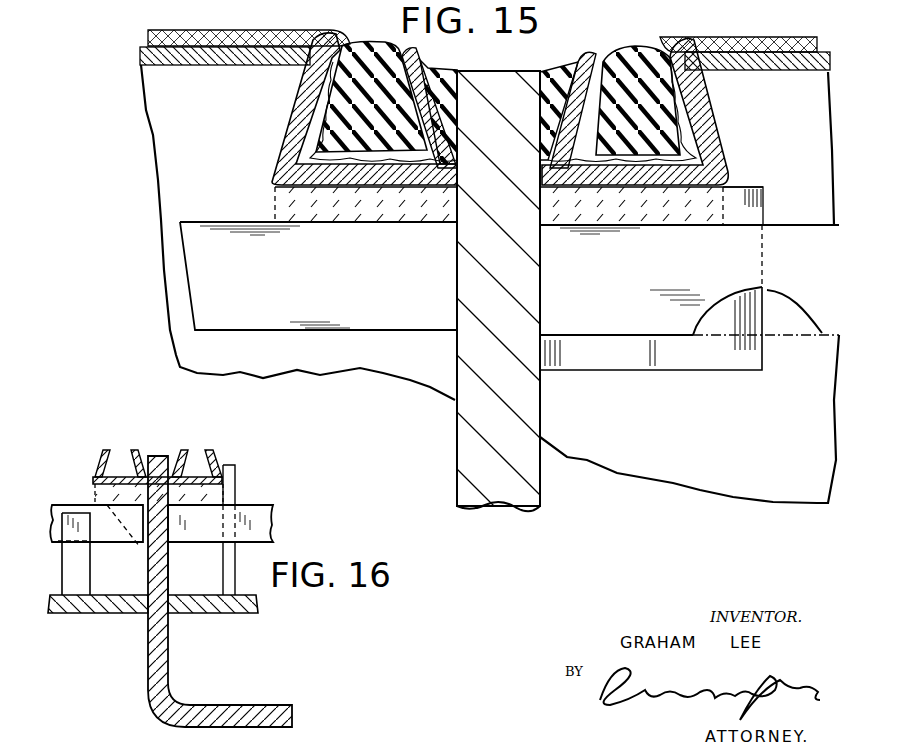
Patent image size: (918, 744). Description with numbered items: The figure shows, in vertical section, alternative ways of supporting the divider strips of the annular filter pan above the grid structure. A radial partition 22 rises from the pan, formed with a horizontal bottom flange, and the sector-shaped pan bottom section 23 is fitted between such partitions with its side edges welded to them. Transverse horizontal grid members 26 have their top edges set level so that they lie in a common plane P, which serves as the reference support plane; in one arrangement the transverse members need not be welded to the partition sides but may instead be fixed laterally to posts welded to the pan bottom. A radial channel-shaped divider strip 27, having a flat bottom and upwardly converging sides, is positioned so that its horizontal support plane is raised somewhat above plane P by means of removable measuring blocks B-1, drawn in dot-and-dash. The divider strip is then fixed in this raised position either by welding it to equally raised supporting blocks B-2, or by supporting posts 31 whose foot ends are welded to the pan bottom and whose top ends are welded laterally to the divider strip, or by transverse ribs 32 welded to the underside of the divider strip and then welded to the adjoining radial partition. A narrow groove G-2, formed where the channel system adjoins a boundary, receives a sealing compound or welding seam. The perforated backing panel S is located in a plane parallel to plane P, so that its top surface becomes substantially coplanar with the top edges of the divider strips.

In FIG. 15, the perforated backing panel S is at (240, 66).
In FIG. 15, the common plane P is at (255, 221).
In FIG. 16, the common plane P is at (90, 505).
In FIG. 15, the removable measuring block B-1 is at (385, 207).
In FIG. 16, the removable measuring block B-1 is at (210, 492).
In FIG. 15, the raised supporting block B-2 is at (752, 186).
In FIG. 15, the transverse horizontal grid member 26 is at (343, 310).
In FIG. 16, the transverse horizontal grid member 26 is at (108, 530).
In FIG. 15, the radial partition 22 is at (522, 282).
In FIG. 16, the radial partition 22 is at (168, 650).
In FIG. 16, the radial channel-shaped divider strip 27 is at (104, 457).
In FIG. 16, the narrow groove G-2 is at (146, 474).
In FIG. 16, the supporting post 31 is at (233, 500).
In FIG. 16, the transverse rib 32 is at (147, 552).
In FIG. 16, the pan bottom section 23 is at (197, 603).